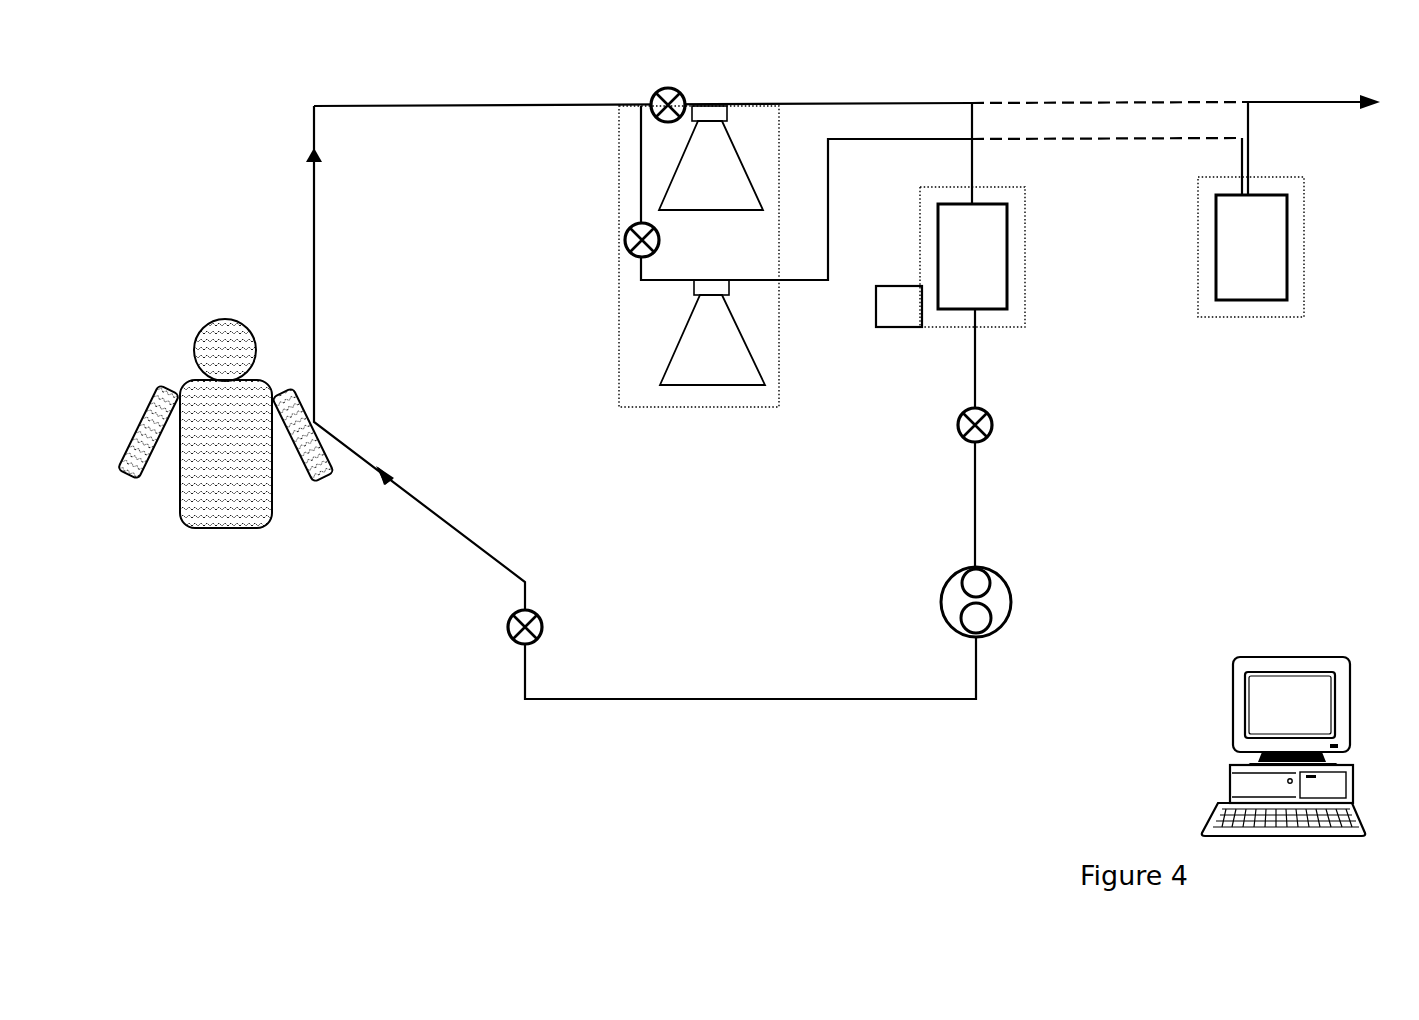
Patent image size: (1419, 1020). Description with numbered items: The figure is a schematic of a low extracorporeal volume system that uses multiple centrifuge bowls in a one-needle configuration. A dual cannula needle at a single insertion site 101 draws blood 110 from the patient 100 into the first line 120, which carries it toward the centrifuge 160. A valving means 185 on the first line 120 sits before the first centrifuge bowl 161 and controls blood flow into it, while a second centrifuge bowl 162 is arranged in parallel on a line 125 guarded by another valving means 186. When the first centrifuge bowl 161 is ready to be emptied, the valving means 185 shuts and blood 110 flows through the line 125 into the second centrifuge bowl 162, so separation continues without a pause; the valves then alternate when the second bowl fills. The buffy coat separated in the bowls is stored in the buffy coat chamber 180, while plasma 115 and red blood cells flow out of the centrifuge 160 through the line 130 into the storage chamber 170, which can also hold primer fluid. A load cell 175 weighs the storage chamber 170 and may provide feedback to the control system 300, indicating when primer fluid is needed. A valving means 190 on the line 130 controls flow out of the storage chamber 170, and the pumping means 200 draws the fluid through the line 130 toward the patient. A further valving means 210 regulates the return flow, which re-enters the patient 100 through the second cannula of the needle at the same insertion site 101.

The patient 100 is at (200, 334).
The insertion site 101 is at (314, 422).
The blood 110 is at (314, 375).
The plasma 115 is at (752, 105).
The first line 120 is at (314, 330).
The line 125 is at (740, 280).
The line 130 is at (975, 545).
The centrifuge 160 is at (619, 393).
The first centrifuge bowl 161 is at (727, 138).
The second centrifuge bowl 162 is at (717, 385).
The storage chamber 170 is at (1003, 255).
The load cell 175 is at (903, 327).
The buffy coat chamber 180 is at (1287, 220).
The valving means 185 is at (650, 93).
The valving means 186 is at (626, 249).
The valving means 190 is at (993, 420).
The pumping means 200 is at (1008, 615).
The valving means 210 is at (545, 622).
The control system 300 is at (1233, 705).